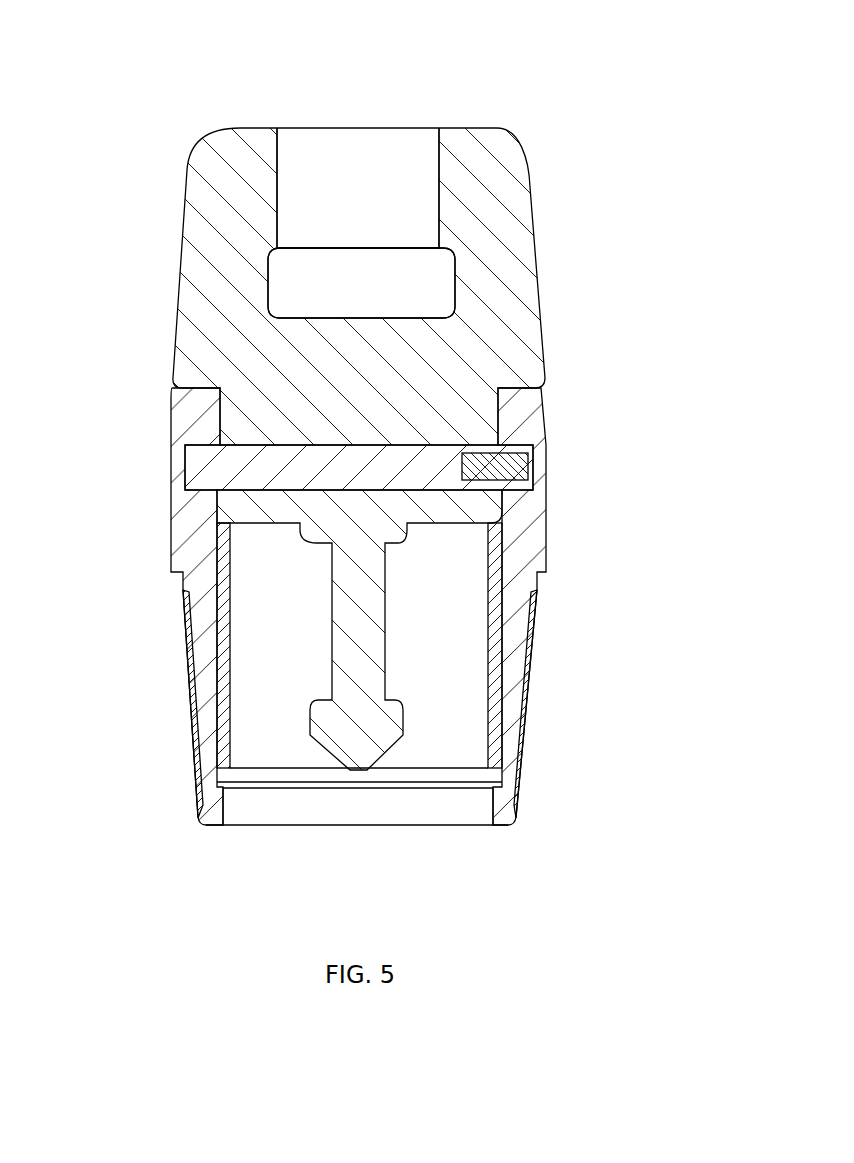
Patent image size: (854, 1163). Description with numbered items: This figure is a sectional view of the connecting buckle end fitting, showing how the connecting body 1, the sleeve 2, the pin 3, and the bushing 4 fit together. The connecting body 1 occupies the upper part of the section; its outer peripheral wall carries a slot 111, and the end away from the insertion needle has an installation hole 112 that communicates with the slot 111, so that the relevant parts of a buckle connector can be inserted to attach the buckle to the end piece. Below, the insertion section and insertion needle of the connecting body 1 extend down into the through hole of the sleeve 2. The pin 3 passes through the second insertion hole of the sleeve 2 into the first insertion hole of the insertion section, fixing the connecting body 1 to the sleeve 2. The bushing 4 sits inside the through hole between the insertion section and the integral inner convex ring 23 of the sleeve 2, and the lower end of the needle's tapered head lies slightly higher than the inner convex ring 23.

The connecting body 1 is at (536, 333).
The slot 111 is at (416, 278).
The installation hole 112 is at (375, 154).
The sleeve 2 is at (536, 550).
The pin 3 is at (186, 470).
The bushing 4 is at (192, 686).
The inner convex ring 23 is at (226, 822).